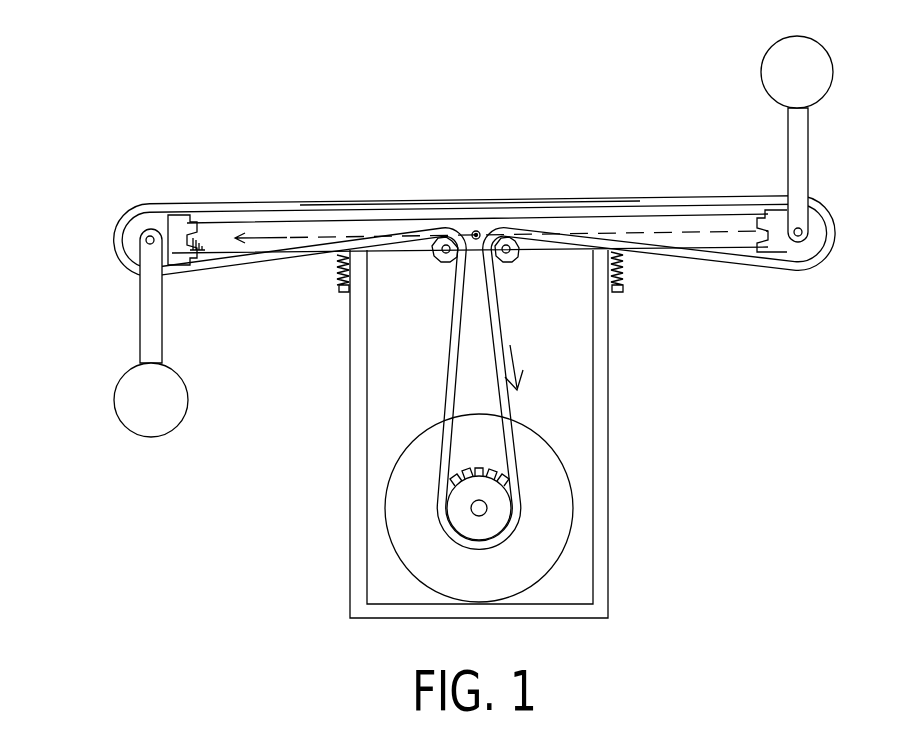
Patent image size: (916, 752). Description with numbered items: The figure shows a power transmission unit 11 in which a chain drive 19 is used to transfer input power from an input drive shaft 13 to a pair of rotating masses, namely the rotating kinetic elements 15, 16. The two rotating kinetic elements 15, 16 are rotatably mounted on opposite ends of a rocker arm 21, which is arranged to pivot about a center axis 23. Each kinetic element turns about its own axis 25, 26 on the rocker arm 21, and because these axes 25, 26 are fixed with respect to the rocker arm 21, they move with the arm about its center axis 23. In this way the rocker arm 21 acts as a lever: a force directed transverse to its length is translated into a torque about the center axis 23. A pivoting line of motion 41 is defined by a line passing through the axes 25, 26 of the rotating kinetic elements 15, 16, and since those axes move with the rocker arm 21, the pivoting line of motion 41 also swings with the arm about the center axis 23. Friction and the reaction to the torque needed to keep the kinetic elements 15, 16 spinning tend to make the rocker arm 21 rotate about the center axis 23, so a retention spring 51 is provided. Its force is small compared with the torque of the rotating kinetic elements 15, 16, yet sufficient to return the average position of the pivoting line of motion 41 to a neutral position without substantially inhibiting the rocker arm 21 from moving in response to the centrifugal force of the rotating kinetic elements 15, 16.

The power transmission unit 11 is at (391, 129).
The input drive shaft 13 is at (487, 510).
The rotating kinetic element 15 is at (140, 313).
The rotating kinetic element 16 is at (802, 128).
The chain drive 19 is at (500, 308).
The rocker arm 21 is at (297, 207).
The center axis 23 is at (478, 231).
The axis 25 is at (150, 236).
The axis 26 is at (805, 232).
The pivoting line of motion 41 is at (258, 239).
The retention spring 51 is at (337, 276).